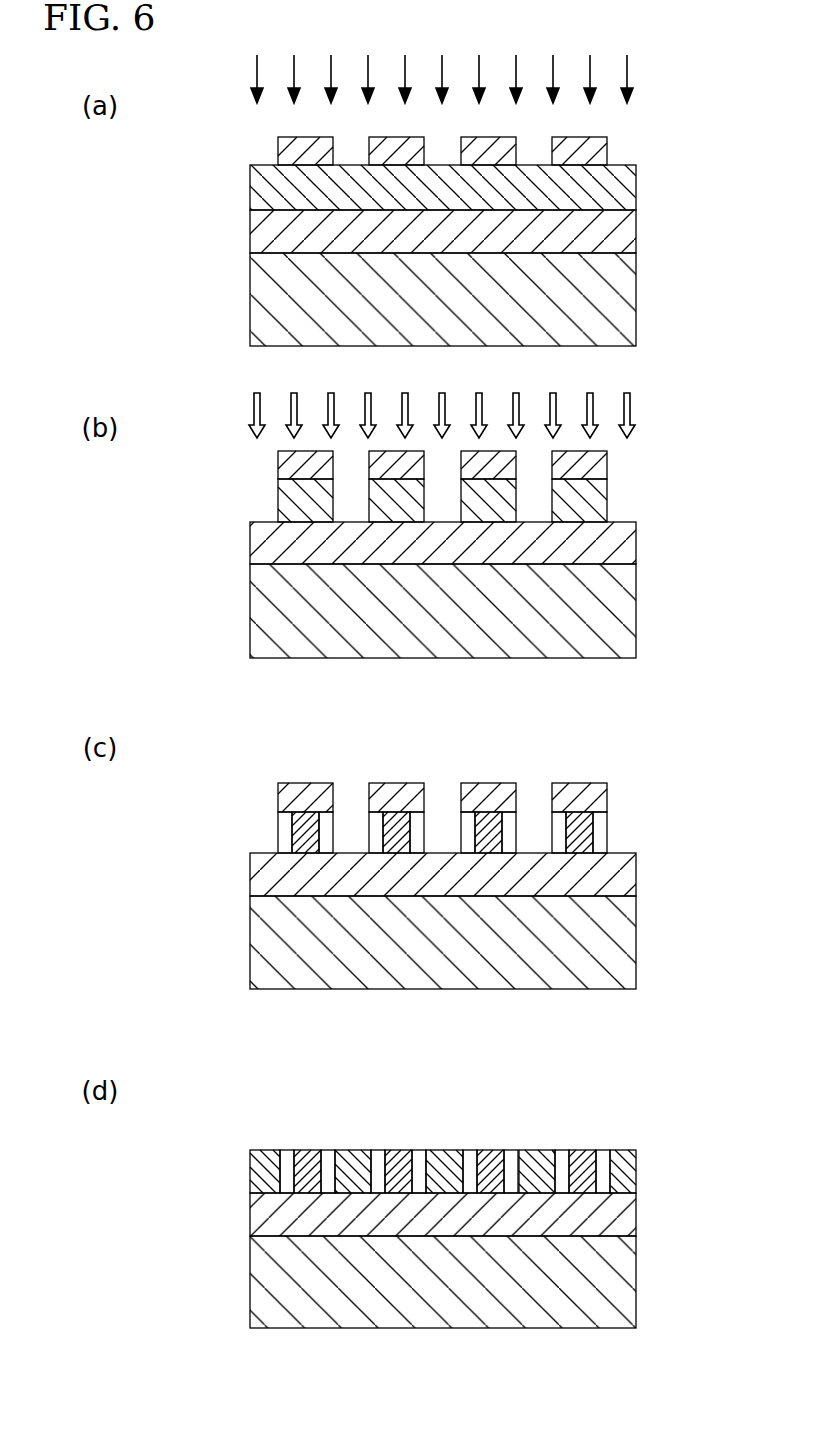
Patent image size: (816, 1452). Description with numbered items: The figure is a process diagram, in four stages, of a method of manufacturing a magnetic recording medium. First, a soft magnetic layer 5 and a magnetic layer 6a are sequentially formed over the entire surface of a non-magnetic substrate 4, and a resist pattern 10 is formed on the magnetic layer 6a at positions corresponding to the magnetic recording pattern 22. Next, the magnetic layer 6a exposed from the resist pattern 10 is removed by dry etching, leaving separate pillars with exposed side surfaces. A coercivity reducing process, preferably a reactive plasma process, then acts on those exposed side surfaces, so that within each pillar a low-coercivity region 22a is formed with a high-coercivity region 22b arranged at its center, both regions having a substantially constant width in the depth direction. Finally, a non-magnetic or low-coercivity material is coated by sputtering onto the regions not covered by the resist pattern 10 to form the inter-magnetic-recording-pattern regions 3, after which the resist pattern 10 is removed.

The inter-magnetic-recording-pattern region 3 is at (447, 1167).
The non-magnetic substrate 4 is at (614, 297).
The soft magnetic layer 5 is at (617, 232).
The magnetic layer 6a is at (620, 185).
The resist pattern 10 is at (598, 148).
The magnetic recording pattern 22 is at (463, 939).
The low-coercivity region 22a is at (375, 832).
The high-coercivity region 22b is at (318, 731).